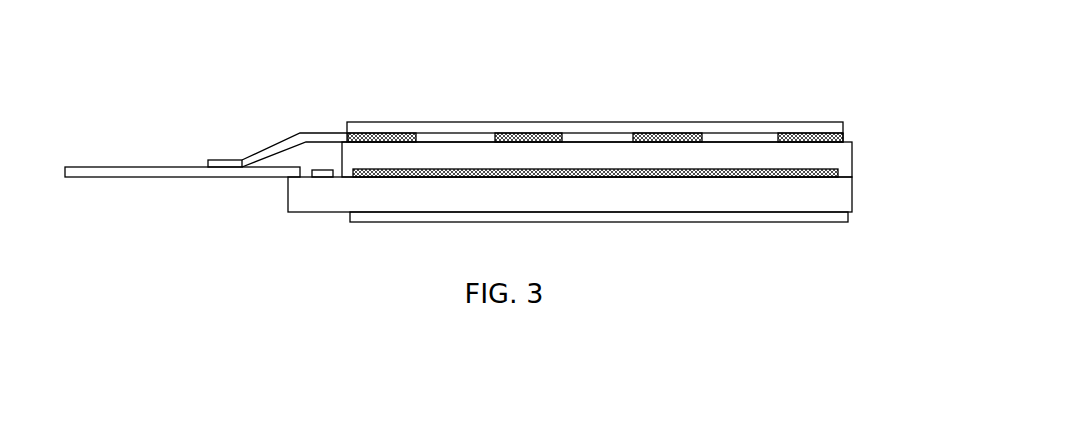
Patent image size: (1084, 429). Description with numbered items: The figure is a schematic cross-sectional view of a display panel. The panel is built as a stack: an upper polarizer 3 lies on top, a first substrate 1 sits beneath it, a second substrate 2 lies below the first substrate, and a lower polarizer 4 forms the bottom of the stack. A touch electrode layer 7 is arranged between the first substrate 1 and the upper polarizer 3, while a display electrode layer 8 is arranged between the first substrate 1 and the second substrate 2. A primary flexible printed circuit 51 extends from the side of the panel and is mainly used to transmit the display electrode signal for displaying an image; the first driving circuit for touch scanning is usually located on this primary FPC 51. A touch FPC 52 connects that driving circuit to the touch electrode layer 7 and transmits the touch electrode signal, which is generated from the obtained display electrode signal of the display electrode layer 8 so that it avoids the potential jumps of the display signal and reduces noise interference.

The first substrate 1 is at (840, 158).
The second substrate 2 is at (838, 194).
The upper polarizer 3 is at (793, 125).
The lower polarizer 4 is at (835, 217).
The touch electrode layer 7 is at (843, 132).
The display electrode layer 8 is at (837, 172).
The primary flexible printed circuit 51 is at (200, 170).
The touch FPC 52 is at (305, 135).